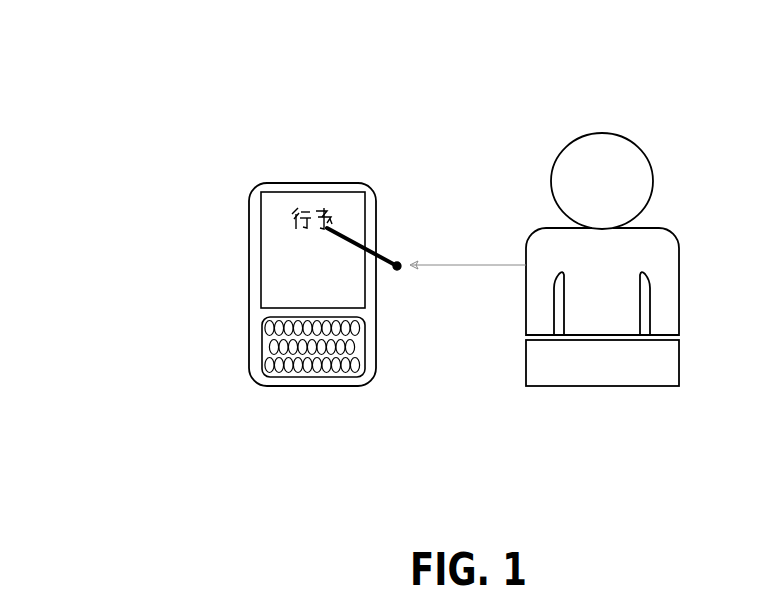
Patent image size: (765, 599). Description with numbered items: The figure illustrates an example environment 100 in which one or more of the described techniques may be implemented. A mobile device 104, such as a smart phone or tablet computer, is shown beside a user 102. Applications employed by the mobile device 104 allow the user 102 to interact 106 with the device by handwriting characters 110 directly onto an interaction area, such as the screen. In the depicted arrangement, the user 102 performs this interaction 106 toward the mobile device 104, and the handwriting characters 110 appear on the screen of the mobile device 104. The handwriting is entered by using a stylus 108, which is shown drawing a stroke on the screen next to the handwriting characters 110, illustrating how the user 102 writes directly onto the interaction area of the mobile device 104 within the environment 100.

The environment 100 is at (148, 67).
The user 102 is at (587, 385).
The mobile device 104 is at (315, 387).
The interact 106 is at (485, 265).
The stylus 108 is at (378, 253).
The handwriting characters 110 is at (311, 205).